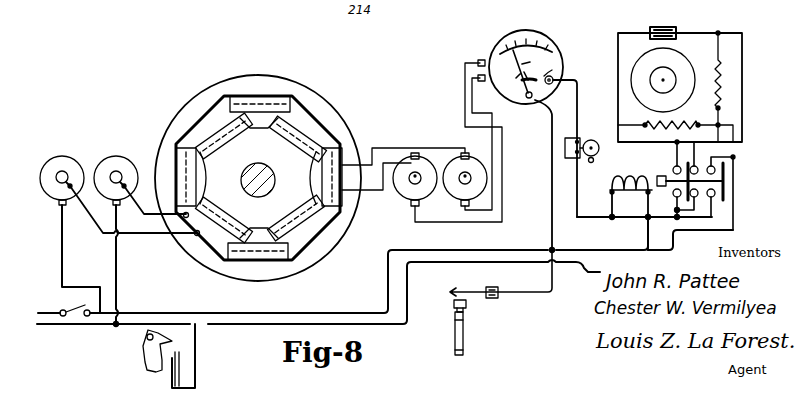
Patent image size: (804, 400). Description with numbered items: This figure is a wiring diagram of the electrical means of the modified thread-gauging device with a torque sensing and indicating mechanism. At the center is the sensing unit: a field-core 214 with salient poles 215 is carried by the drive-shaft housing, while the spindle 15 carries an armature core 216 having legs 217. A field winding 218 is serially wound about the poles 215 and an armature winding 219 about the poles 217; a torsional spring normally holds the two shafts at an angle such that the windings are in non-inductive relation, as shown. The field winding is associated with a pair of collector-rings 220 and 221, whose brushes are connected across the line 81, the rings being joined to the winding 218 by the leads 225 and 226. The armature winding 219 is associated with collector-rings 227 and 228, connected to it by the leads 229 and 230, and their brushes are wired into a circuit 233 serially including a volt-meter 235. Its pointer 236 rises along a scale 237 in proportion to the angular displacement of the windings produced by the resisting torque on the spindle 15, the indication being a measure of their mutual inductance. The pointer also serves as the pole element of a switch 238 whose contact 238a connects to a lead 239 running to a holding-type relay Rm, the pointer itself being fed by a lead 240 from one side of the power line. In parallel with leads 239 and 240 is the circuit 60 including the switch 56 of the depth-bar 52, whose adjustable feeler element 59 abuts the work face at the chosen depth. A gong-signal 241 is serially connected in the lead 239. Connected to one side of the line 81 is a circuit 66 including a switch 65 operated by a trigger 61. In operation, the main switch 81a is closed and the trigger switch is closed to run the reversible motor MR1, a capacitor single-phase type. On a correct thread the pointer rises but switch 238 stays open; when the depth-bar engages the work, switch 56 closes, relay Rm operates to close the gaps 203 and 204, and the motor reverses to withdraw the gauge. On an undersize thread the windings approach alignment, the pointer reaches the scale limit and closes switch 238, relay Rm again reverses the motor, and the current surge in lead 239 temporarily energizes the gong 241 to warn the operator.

The spindle 15 is at (258, 164).
The field-core 214 is at (322, 106).
The salient poles 215 is at (213, 97).
The armature core 216 is at (215, 250).
The legs 217 is at (205, 128).
The field winding 218 is at (298, 104).
The armature winding 219 is at (343, 128).
The collector-ring 220 is at (62, 160).
The collector-ring 221 is at (116, 160).
The lead 225 is at (156, 214).
The lead 226 is at (130, 233).
The collector-ring 227 is at (408, 210).
The collector-ring 228 is at (457, 194).
The lead 229 is at (420, 148).
The lead 230 is at (403, 194).
The circuit 233 is at (465, 96).
The volt-meter 235 is at (564, 43).
The pointer 236 is at (514, 64).
The scale 237 is at (520, 46).
The switch 238 is at (560, 72).
The contact 238a is at (554, 76).
The lead 239 is at (574, 98).
The lead 240 is at (552, 186).
The gong-signal 241 is at (594, 124).
The reversible motor MR1 is at (711, 30).
The relay Rm is at (626, 173).
The gap 203 is at (682, 197).
The gap 204 is at (713, 197).
The line 81 is at (494, 246).
The main switch 81a is at (75, 310).
The trigger member 61 is at (143, 350).
The switch 65 is at (157, 378).
The lead 66 is at (184, 360).
The switch 56 is at (477, 284).
The adjustable feeler element 59 is at (454, 303).
The depth-bar 52 is at (464, 332).
The leads 60 is at (534, 298).